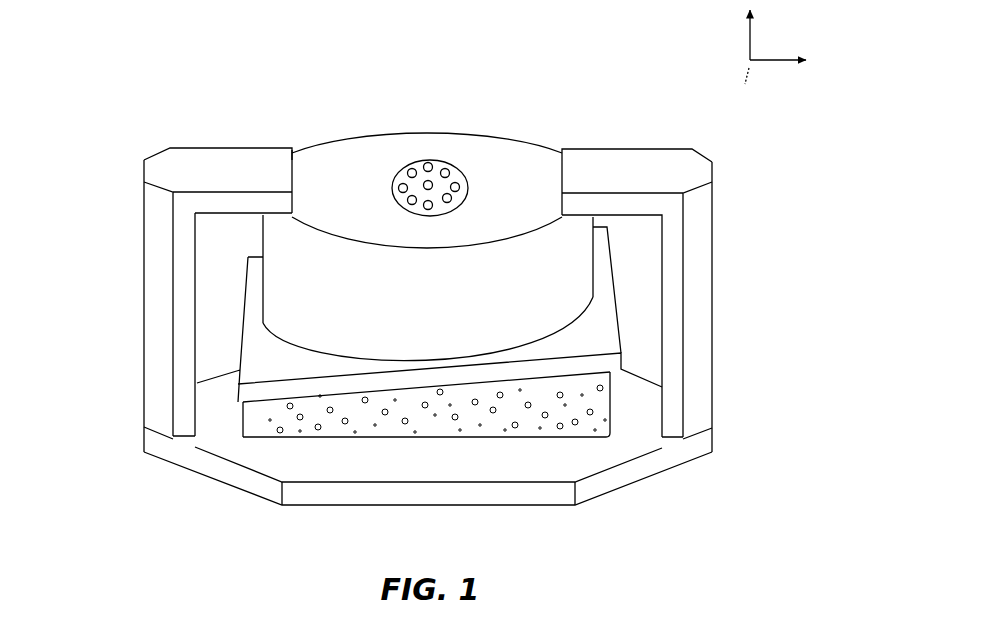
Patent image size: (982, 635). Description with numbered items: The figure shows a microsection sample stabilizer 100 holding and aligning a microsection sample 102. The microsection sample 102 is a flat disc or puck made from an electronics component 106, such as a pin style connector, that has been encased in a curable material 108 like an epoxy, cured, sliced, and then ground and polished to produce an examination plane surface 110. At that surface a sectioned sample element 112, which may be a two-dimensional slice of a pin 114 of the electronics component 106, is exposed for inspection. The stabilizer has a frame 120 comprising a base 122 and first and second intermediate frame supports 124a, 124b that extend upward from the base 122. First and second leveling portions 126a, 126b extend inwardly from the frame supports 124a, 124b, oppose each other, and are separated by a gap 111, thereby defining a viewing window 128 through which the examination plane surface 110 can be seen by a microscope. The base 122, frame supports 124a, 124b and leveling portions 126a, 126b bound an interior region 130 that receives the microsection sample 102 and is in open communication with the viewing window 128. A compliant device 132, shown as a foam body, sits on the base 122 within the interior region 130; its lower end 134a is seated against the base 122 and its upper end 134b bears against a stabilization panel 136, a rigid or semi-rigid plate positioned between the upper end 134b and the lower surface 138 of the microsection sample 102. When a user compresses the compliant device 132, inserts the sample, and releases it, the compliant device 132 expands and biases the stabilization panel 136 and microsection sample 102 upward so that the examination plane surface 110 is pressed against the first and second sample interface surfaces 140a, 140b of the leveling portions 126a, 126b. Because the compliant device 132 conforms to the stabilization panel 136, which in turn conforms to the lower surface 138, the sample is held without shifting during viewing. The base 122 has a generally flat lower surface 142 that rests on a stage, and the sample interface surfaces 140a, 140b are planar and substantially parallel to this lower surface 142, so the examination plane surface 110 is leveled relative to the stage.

The microsection sample stabilizer 100 is at (128, 68).
The microsection sample 102 is at (342, 98).
The electronics component 106 is at (397, 163).
The curable material 108 is at (412, 165).
The examination plane surface 110 is at (517, 155).
The gap 111 is at (551, 158).
The sectioned sample element 112 is at (436, 160).
The pin 114 is at (462, 176).
The frame 120 is at (94, 244).
The base 122 is at (655, 462).
The first intermediate frame support 124a is at (155, 365).
The second intermediate frame support 124b is at (700, 377).
The first leveling portion 126a is at (222, 162).
The second leveling portion 126b is at (648, 158).
The viewing window 128 is at (307, 156).
The interior region 130 is at (207, 260).
The compliant device 132 is at (563, 407).
The lower end of the compliant device 134a is at (282, 448).
The upper end of the compliant device 134b is at (267, 409).
The stabilization panel 136 is at (243, 437).
The lower surface of the microsection sample 138 is at (365, 370).
The first sample interface surface 140a is at (236, 224).
The second sample interface surface 140b is at (630, 222).
The lower surface of the base 142 is at (636, 489).